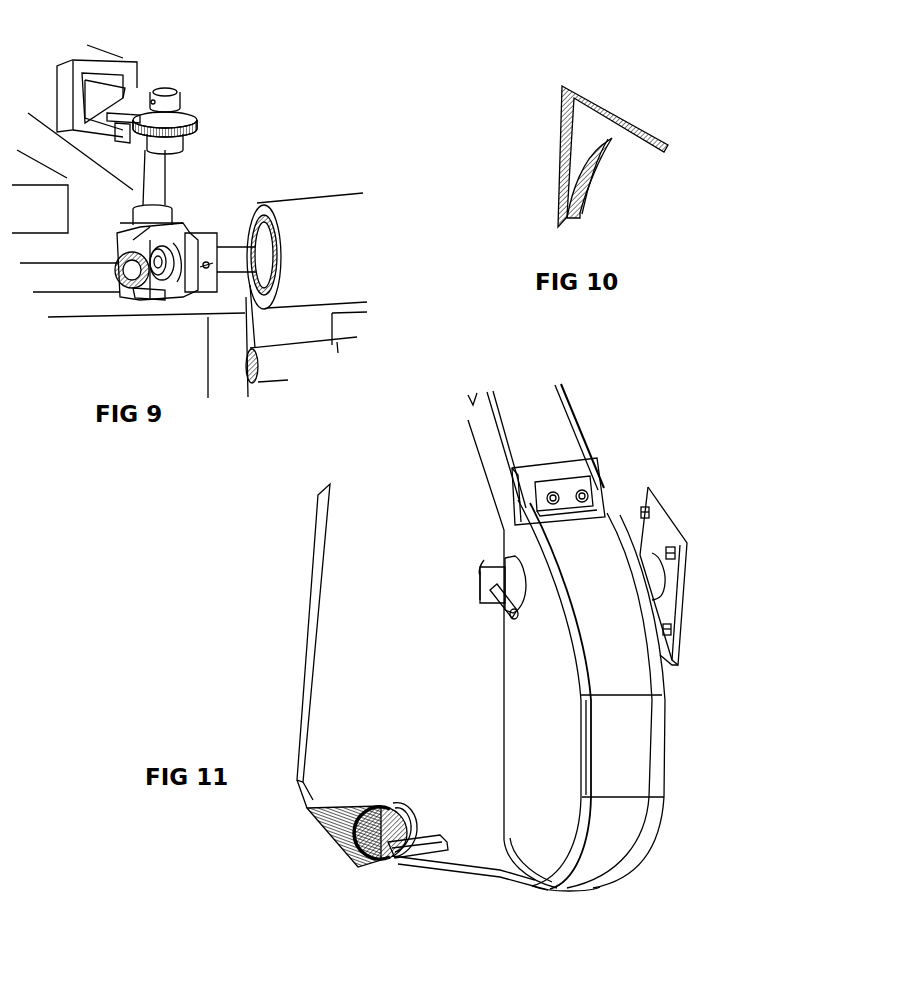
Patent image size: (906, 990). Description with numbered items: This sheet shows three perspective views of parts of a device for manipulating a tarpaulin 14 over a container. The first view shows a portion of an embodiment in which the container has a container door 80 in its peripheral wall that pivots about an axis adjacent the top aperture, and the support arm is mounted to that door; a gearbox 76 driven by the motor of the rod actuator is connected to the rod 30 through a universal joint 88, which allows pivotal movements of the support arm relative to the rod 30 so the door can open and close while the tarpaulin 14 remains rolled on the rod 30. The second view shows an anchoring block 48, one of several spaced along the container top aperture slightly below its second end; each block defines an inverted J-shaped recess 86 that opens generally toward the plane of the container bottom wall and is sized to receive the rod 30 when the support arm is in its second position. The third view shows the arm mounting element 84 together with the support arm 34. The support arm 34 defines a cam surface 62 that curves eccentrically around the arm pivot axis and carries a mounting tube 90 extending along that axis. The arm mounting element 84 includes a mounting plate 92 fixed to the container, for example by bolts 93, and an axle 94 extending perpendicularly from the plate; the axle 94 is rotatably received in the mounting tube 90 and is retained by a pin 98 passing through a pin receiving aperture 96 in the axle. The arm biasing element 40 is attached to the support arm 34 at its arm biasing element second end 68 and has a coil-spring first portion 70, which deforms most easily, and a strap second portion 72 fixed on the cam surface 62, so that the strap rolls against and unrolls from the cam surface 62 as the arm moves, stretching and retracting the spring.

In FIG. 9, the tarpaulin 14 is at (312, 202).
In FIG. 9, the rod 30 is at (260, 253).
In FIG. 11, the support arm 34 is at (598, 392).
In FIG. 11, the arm biasing element 40 is at (383, 787).
In FIG. 10, the anchoring block 48 is at (595, 100).
In FIG. 11, the cam surface 62 is at (657, 673).
In FIG. 11, the arm biasing element second end 68 is at (587, 487).
In FIG. 11, the arm biasing element first portion 70 is at (340, 807).
In FIG. 11, the arm biasing element second portion 72 is at (462, 863).
In FIG. 9, the gearbox 76 is at (180, 112).
In FIG. 9, the container door 80 is at (93, 193).
In FIG. 11, the arm mounting element 84 is at (680, 522).
In FIG. 10, the recess 86 is at (610, 150).
In FIG. 9, the universal joint 88 is at (183, 228).
In FIG. 11, the mounting tube 90 is at (513, 570).
In FIG. 11, the mounting plate 92 is at (658, 518).
In FIG. 11, the bolts 93 is at (680, 552).
In FIG. 11, the axle 94 is at (483, 583).
In FIG. 11, the pin receiving aperture 96 is at (493, 588).
In FIG. 11, the pin 98 is at (505, 607).